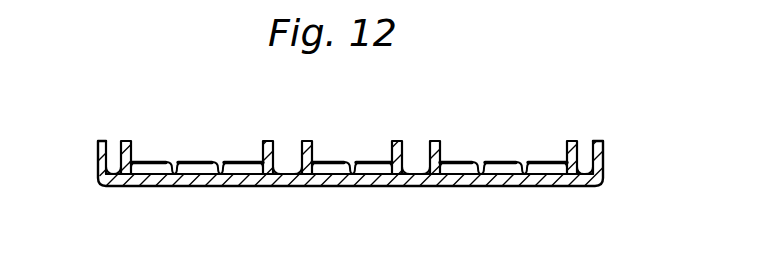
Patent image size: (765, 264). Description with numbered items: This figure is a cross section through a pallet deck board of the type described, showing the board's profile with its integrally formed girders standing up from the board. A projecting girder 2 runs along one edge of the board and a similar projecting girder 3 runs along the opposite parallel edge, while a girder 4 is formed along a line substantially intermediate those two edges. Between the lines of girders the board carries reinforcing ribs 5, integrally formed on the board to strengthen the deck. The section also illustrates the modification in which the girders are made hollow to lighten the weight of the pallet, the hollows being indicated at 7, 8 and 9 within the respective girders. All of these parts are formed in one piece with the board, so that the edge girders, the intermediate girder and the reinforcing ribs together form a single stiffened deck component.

The projecting girder 2 is at (125, 143).
The projecting girder 3 is at (603, 168).
The girder 4 is at (305, 142).
The reinforcing rib 5 is at (502, 162).
The hollow 7 is at (98, 152).
The hollow 8 is at (583, 145).
The hollow 9 is at (285, 157).